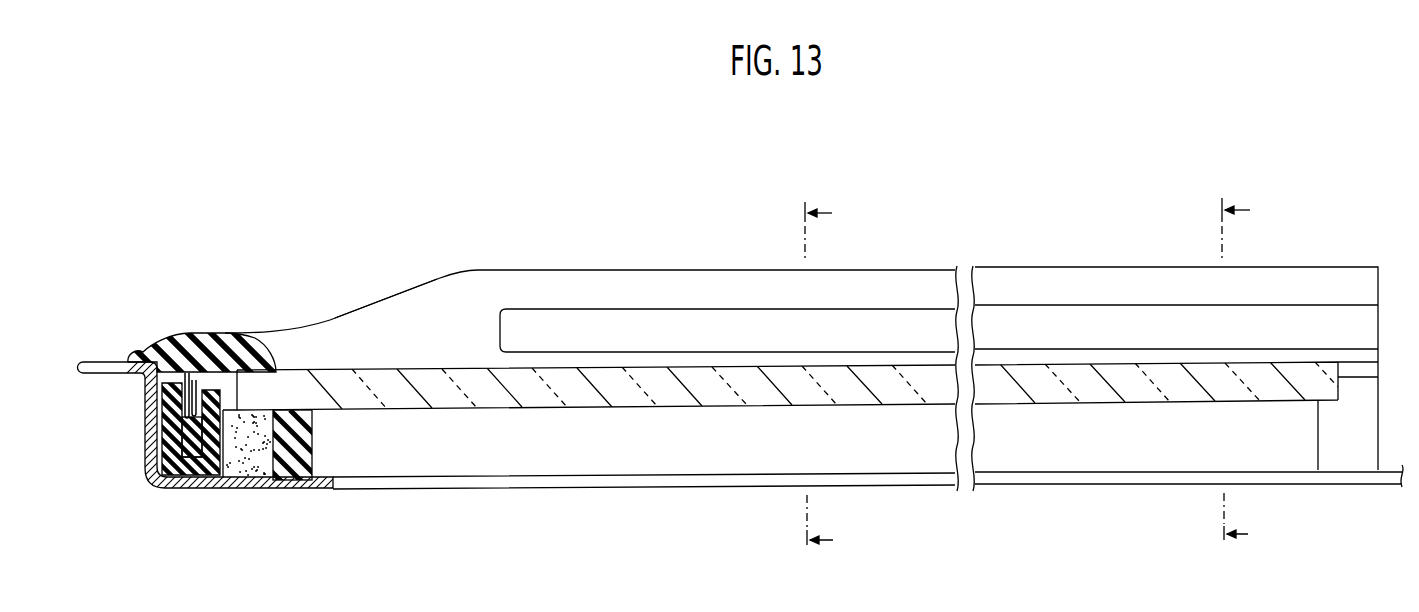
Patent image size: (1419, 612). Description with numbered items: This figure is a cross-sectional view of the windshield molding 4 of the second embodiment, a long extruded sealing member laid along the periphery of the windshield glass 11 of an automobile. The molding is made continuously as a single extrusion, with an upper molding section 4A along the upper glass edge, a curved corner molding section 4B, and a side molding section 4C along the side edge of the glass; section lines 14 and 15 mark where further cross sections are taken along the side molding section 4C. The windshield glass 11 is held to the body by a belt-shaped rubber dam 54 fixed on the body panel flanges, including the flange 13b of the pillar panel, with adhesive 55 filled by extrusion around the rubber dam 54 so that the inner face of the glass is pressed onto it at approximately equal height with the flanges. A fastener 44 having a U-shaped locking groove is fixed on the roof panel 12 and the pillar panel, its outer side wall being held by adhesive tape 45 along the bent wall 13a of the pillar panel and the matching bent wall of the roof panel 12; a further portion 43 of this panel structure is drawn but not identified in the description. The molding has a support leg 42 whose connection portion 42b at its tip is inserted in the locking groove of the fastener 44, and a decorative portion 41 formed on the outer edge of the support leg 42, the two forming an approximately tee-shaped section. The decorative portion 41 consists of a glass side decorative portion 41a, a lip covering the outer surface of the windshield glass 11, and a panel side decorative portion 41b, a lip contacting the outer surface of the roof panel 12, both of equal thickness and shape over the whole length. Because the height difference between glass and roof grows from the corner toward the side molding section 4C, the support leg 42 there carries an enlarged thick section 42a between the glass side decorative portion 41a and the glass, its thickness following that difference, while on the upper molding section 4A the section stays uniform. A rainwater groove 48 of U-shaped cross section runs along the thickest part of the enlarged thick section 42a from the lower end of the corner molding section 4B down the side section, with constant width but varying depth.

The windshield molding 4 is at (717, 240).
The upper molding section 4A is at (221, 318).
The corner molding section 4B is at (366, 292).
The side molding section 4C is at (1095, 245).
The windshield glass 11 is at (711, 406).
The roof panel 12 is at (103, 362).
The bent wall 13a is at (150, 447).
The flange 13b is at (297, 490).
The decorative portion 41 is at (185, 333).
The glass side decorative portion 41a is at (273, 340).
The panel side decorative portion 41b is at (131, 352).
The support leg 42 is at (157, 482).
The enlarged thick section 42a is at (1057, 354).
The connection portion 42b is at (222, 425).
The shield upper portion 43 is at (147, 383).
The fastener 44 is at (199, 468).
The adhesive tape 45 is at (160, 414).
The rainwater groove 48 is at (901, 318).
The rubber dam 54 is at (296, 460).
The adhesive 55 is at (256, 470).
The section line 14 is at (845, 380).
The section line 15 is at (1262, 374).